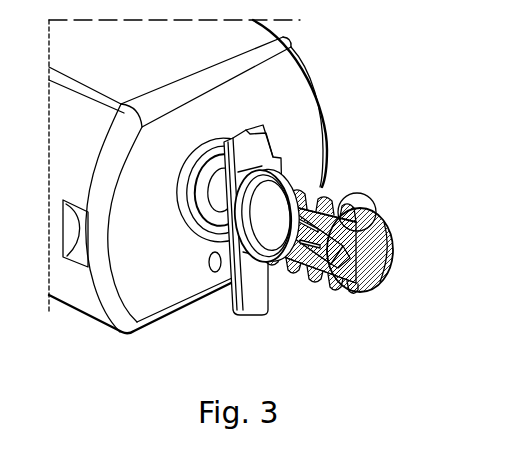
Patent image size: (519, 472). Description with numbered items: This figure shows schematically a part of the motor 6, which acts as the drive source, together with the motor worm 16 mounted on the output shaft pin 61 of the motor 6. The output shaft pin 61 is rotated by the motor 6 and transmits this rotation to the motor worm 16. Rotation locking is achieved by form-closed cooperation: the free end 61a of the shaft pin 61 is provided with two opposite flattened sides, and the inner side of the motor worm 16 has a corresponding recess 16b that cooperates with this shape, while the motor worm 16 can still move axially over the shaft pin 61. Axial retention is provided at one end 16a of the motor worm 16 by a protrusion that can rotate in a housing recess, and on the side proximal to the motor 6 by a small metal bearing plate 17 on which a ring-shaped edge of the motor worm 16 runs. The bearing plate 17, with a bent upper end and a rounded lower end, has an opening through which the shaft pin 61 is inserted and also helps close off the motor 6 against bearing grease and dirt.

The motor 6 is at (283, 81).
The bearing plate 17 is at (262, 150).
The motor worm 16 is at (350, 251).
The end of the motor worm 16a is at (393, 252).
The recess 16b is at (350, 212).
The output shaft pin 61 is at (303, 270).
The free end 61a is at (355, 293).